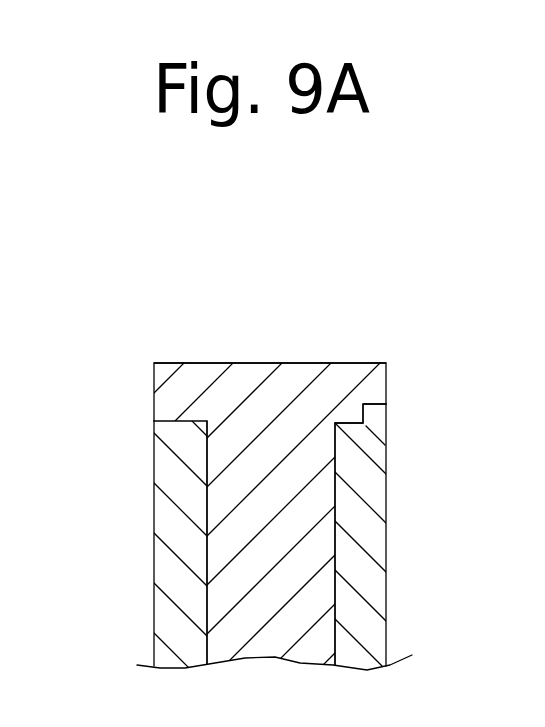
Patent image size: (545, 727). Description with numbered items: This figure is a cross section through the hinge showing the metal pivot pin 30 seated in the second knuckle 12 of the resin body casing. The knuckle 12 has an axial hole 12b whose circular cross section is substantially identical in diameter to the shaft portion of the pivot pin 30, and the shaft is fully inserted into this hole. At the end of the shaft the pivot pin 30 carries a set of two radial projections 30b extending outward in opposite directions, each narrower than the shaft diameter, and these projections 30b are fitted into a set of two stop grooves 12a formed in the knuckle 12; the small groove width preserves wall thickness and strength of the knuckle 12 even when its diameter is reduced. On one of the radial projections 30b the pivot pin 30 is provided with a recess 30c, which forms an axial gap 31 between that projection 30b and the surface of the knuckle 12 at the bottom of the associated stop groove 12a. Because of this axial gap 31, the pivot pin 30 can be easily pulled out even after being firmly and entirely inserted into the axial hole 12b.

The pivot pin 30 is at (298, 363).
The radial projection 30b is at (192, 378).
The recess 30c is at (372, 411).
The axial gap 31 is at (454, 443).
The second knuckle 12 is at (368, 610).
The stop groove 12a is at (178, 421).
The axial hole 12b is at (338, 507).